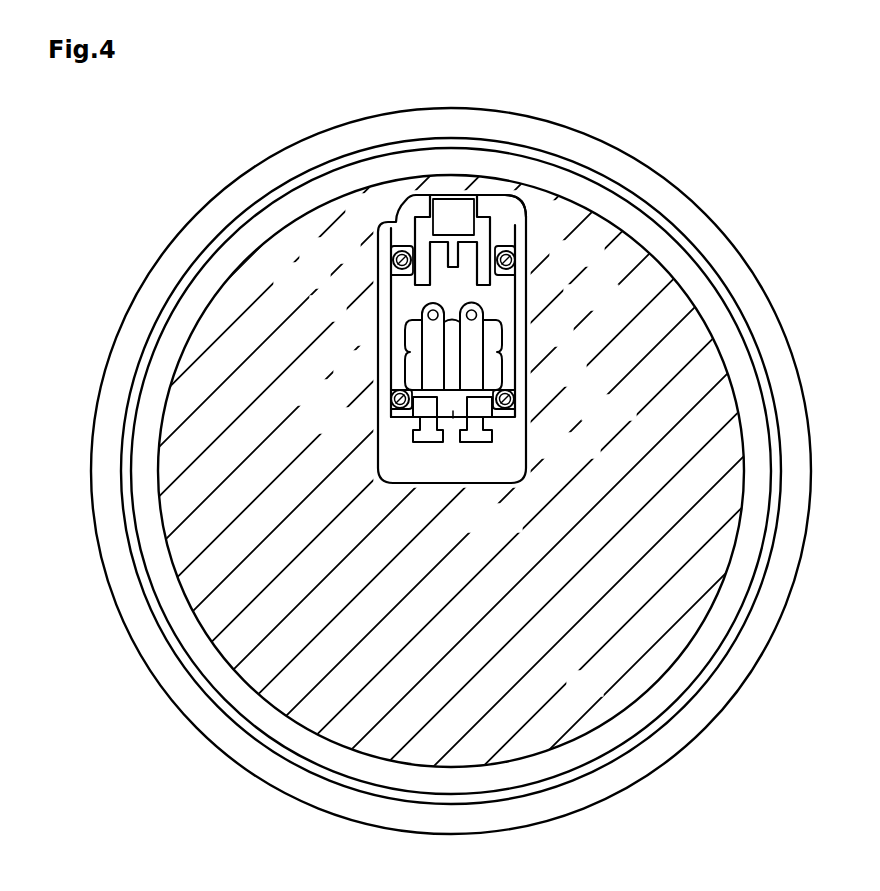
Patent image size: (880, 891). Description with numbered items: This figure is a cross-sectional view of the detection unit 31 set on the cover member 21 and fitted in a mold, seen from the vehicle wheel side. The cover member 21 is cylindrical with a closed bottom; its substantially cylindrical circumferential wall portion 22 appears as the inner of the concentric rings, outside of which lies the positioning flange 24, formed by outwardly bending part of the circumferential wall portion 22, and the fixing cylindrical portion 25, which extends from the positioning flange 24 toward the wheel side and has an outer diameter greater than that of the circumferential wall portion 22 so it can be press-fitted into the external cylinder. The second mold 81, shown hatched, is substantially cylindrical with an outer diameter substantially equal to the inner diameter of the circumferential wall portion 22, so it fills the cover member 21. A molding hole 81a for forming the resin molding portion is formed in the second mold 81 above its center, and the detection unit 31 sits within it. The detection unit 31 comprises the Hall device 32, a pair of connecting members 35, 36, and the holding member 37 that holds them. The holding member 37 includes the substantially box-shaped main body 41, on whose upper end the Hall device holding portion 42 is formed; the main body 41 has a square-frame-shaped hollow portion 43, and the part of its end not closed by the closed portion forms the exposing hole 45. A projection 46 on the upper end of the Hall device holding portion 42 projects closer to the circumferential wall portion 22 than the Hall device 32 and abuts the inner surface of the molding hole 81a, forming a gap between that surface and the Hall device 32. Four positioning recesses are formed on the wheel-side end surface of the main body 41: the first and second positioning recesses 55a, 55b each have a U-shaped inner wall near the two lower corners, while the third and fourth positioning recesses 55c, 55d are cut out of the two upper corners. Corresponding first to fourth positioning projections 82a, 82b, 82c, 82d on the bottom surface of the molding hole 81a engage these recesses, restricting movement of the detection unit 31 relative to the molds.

The cover member 21 is at (716, 723).
The positioning flange 24 is at (317, 793).
The fixing cylindrical portion 25 is at (510, 803).
The circumferential wall portion 22 is at (642, 701).
The second mold 81 is at (263, 685).
The molding hole 81a is at (488, 483).
The detection unit 31 is at (517, 335).
The Hall device 32 is at (437, 211).
The connecting member 35 is at (432, 443).
The connecting member 36 is at (474, 443).
The holding member 37 is at (392, 368).
The main body 41 is at (403, 326).
The Hall device holding portion 42 is at (510, 222).
The hollow portion 43 is at (453, 411).
The exposing hole 45 is at (415, 297).
The projection 46 is at (445, 192).
The first positioning recess 55a is at (388, 408).
The second positioning recess 55b is at (521, 409).
The third positioning recess 55c is at (527, 263).
The fourth positioning recess 55d is at (388, 263).
The first positioning projection 82a is at (391, 400).
The second positioning projection 82b is at (514, 401).
The third positioning projection 82c is at (515, 262).
The fourth positioning projection 82d is at (393, 259).